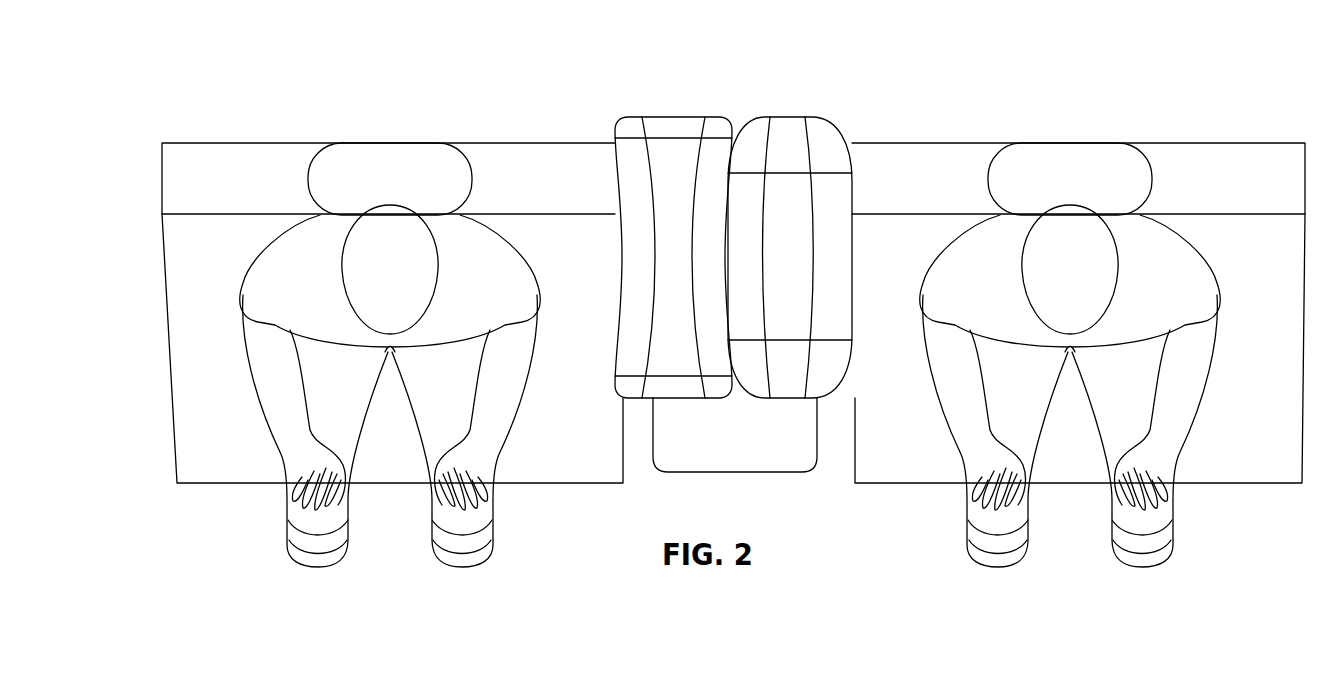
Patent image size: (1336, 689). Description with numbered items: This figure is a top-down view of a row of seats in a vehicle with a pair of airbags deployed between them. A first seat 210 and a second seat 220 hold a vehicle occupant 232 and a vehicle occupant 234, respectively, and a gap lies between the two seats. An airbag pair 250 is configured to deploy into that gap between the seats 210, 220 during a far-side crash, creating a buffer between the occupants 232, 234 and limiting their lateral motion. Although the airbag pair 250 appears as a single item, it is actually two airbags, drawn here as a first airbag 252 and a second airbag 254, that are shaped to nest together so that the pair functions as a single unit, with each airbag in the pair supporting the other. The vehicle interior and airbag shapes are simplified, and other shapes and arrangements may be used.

The first seat 210 is at (244, 143).
The second seat 220 is at (1223, 143).
The vehicle occupant 232 is at (471, 265).
The vehicle occupant 234 is at (995, 273).
The airbag pair 250 is at (768, 63).
The first divider cushion 252 is at (674, 117).
The second divider cushion 254 is at (785, 117).